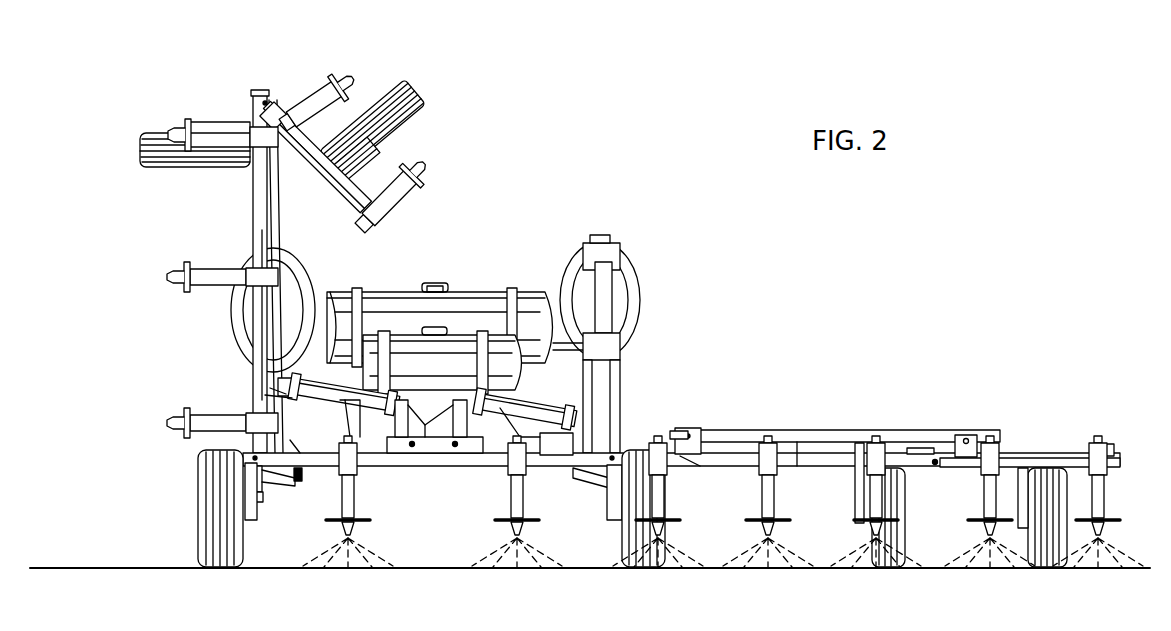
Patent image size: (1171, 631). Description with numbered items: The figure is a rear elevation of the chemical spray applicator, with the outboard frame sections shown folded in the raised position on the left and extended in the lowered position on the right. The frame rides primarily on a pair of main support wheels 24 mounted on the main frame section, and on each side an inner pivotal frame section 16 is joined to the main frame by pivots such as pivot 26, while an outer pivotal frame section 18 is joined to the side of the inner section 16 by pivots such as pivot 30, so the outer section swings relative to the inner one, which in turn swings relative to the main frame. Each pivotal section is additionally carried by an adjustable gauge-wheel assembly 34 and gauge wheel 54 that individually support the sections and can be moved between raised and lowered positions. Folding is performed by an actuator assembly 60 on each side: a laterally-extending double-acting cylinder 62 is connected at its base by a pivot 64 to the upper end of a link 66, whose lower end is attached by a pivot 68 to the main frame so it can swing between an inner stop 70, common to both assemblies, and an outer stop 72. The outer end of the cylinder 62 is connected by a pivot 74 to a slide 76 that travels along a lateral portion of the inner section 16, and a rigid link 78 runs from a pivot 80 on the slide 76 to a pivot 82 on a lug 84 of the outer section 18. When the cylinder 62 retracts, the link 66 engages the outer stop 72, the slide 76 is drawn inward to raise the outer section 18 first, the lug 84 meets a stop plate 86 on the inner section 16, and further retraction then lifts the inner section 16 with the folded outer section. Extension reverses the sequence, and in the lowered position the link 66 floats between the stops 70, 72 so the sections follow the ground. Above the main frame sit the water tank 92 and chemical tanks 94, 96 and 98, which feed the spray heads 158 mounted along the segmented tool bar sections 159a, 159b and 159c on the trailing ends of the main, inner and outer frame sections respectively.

The inner pivotal frame section 16 is at (266, 205).
The outer pivotal frame section 18 is at (356, 190).
The main support wheel 24 is at (200, 510).
The pivot 26 is at (257, 461).
The pivot 30 is at (262, 96).
The gauge-wheel assembly 34 is at (408, 122).
The gauge wheel 54 is at (158, 168).
The actuator assembly 60 is at (218, 364).
The double-acting cylinder 62 is at (320, 402).
The pivot 64 is at (448, 412).
The link 66 is at (410, 404).
The pivot 68 is at (411, 447).
The inner stop 70 is at (437, 453).
The outer stop 72 is at (388, 452).
The pivot 74 is at (683, 434).
The slide 76 is at (270, 388).
The rigid link 78 is at (276, 178).
The pivot 80 is at (280, 384).
The pivot 82 is at (278, 112).
The lug 84 is at (266, 101).
The stop plate 86 is at (918, 448).
The water tank 92 is at (340, 295).
The chemical tank 94 is at (632, 322).
The chemical tank 96 is at (245, 305).
The chemical tank 98 is at (405, 345).
The spray head 158 is at (212, 128).
The tool bar section 159a is at (545, 470).
The tool bar section 159b is at (258, 230).
The tool bar section 159c is at (358, 208).